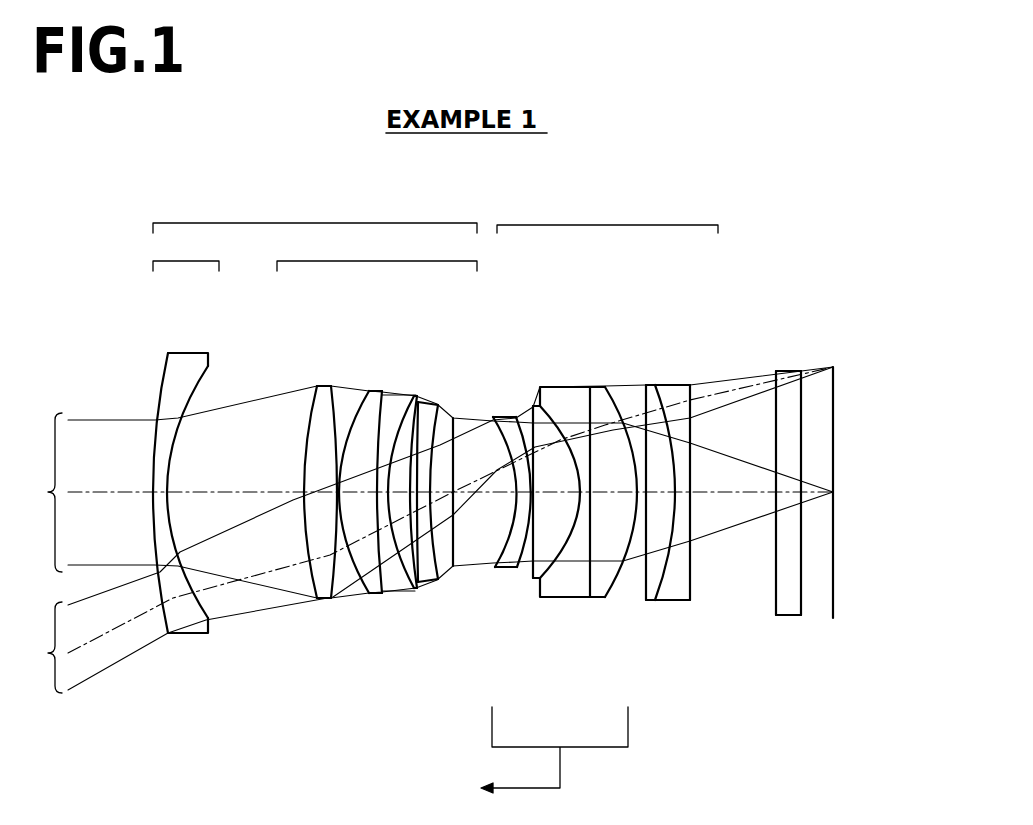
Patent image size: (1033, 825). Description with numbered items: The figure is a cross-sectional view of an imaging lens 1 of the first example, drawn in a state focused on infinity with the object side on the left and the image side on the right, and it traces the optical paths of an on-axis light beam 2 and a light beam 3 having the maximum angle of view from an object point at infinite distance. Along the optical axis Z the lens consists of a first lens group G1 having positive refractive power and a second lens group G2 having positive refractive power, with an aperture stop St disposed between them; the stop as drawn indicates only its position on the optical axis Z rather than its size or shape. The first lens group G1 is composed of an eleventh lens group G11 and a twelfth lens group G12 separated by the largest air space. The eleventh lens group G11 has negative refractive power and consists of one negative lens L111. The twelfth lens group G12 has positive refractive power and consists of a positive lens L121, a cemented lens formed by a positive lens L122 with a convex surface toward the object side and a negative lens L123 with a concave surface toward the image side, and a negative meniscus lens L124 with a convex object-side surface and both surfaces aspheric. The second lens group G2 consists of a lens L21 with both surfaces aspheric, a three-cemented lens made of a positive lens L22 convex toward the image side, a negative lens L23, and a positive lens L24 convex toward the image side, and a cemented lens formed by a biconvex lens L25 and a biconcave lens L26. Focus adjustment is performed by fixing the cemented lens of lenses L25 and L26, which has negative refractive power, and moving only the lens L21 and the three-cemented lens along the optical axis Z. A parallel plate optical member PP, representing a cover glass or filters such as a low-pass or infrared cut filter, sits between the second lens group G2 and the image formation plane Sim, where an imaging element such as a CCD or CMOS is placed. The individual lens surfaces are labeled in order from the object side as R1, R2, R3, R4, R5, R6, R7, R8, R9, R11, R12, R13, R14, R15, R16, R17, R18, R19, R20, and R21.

The imaging lens 1 is at (511, 200).
The first lens group G1 is at (315, 214).
The eleventh lens group G11 is at (186, 252).
The twelfth lens group G12 is at (377, 252).
The second lens group G2 is at (607, 215).
The optical axis Z is at (83, 486).
The on-axis light beam 2 is at (431, 492).
The light beam having a maximum angle of view 3 is at (431, 530).
The negative lens L111 is at (159, 515).
The positive lens L121 is at (297, 515).
The positive lens L122 is at (373, 531).
The negative lens L123 is at (418, 498).
The negative meniscus lens L124 is at (450, 513).
The aperture stop St is at (452, 432).
The lens L21 is at (510, 482).
The positive lens L22 is at (570, 497).
The negative lens L23 is at (593, 466).
The positive lens L24 is at (638, 531).
The biconvex lens L25 is at (694, 515).
The biconcave lens L26 is at (713, 513).
The parallel plate optical member PP is at (804, 532).
The image formation plane Sim is at (835, 382).
The lens surface R1 is at (158, 623).
The lens surface R2 is at (205, 604).
The lens surface R3 is at (308, 578).
The lens surface R4 is at (338, 598).
The lens surface R5 is at (340, 592).
The lens surface R6 is at (384, 591).
The lens surface R7 is at (396, 600).
The lens surface R8 is at (399, 592).
The lens surface R9 is at (441, 574).
The lens surface R11 is at (492, 568).
The lens surface R12 is at (517, 570).
The lens surface R13 is at (534, 580).
The lens surface R14 is at (570, 565).
The lens surface R15 is at (594, 580).
The lens surface R16 is at (618, 578).
The lens surface R17 is at (658, 600).
The lens surface R18 is at (668, 590).
The lens surface R19 is at (690, 585).
The surface R20 is at (775, 603).
The surface R21 is at (802, 603).